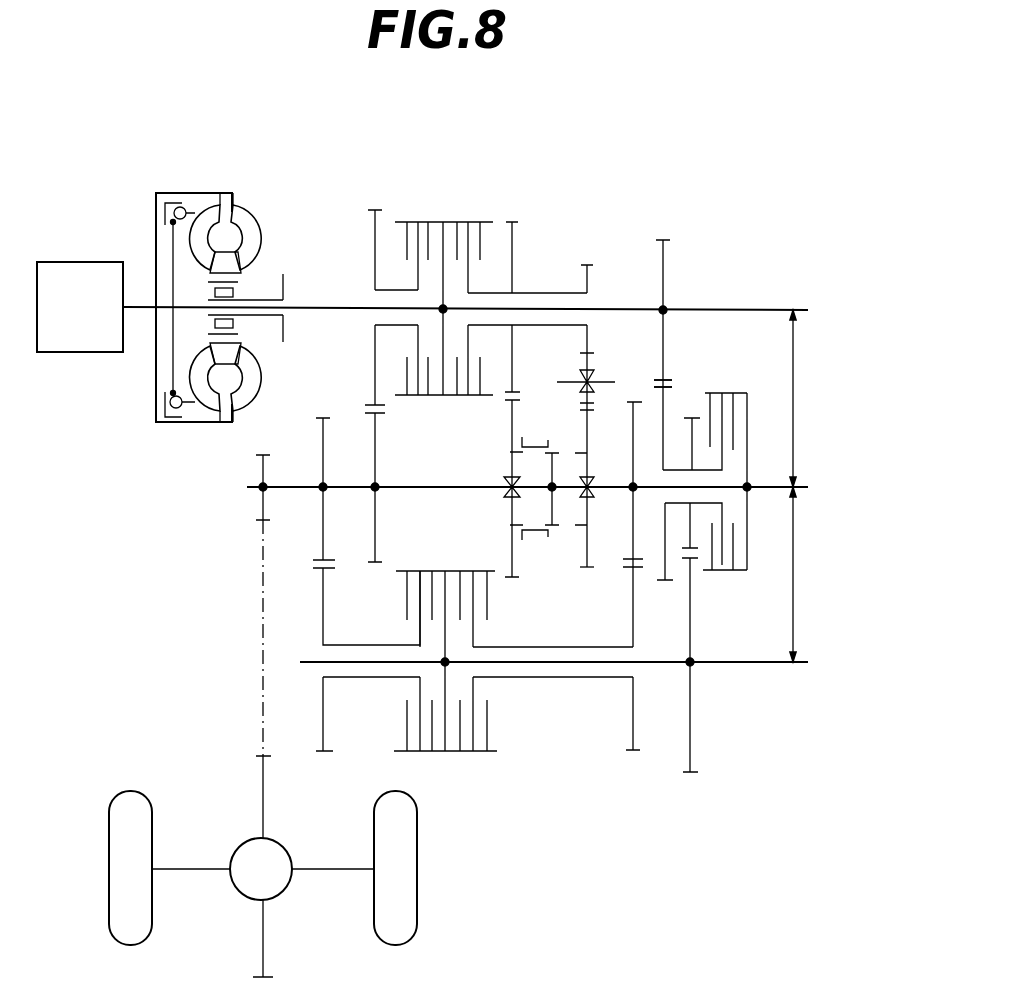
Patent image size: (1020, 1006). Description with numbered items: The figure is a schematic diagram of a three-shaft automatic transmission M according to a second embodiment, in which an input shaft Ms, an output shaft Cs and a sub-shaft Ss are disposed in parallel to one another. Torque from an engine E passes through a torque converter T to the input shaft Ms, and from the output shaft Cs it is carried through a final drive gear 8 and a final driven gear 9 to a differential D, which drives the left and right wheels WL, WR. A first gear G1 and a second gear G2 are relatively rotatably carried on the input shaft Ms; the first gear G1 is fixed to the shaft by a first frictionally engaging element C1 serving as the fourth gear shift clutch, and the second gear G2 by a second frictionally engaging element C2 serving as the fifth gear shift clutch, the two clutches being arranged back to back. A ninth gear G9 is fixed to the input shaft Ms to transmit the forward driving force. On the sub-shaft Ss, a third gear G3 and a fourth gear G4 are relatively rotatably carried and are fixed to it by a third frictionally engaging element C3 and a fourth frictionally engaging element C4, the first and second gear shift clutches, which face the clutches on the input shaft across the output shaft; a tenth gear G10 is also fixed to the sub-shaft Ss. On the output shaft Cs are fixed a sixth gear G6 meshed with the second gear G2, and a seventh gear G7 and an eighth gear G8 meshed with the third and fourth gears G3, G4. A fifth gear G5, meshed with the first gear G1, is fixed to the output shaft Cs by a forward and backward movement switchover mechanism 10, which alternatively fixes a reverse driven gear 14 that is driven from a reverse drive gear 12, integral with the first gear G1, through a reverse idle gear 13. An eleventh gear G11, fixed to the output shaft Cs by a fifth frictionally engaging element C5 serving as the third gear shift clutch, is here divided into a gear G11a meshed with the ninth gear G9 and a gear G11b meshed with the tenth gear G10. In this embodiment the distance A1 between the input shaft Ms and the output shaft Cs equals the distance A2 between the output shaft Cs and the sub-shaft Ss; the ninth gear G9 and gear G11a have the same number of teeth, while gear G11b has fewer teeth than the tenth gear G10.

The engine E is at (80, 307).
The torque converter T is at (232, 178).
The input shaft Ms is at (313, 307).
The output shaft Cs is at (295, 483).
The sub-shaft Ss is at (310, 660).
The automatic transmission M is at (573, 186).
The first frictionally engaging element C1 is at (474, 210).
The second frictionally engaging element C2 is at (417, 210).
The third frictionally engaging element C3 is at (417, 562).
The fourth frictionally engaging element C4 is at (467, 562).
The fifth frictionally engaging element C5 is at (741, 388).
The first gear G1 is at (515, 217).
The second gear G2 is at (373, 207).
The third gear G3 is at (324, 753).
The fourth gear G4 is at (633, 752).
The fifth gear G5 is at (510, 580).
The sixth gear G6 is at (368, 565).
The seventh gear G7 is at (325, 417).
The eighth gear G8 is at (633, 402).
The ninth gear G9 is at (663, 238).
The tenth gear G10 is at (690, 775).
The eleventh gear G11 is at (676, 582).
The gear G11a is at (670, 385).
The gear G11b is at (697, 565).
The final drive gear 8 is at (262, 522).
The final driven gear 9 is at (261, 755).
The forward and backward movement switchover mechanism 10 is at (533, 440).
The reverse drive gear 12 is at (592, 265).
The reverse idle gear 13 is at (592, 353).
The reverse driven gear 14 is at (587, 572).
The distance A1 is at (797, 398).
The distance A2 is at (795, 574).
The differential D is at (277, 851).
The left wheel WL is at (130, 797).
The right wheel WR is at (408, 824).